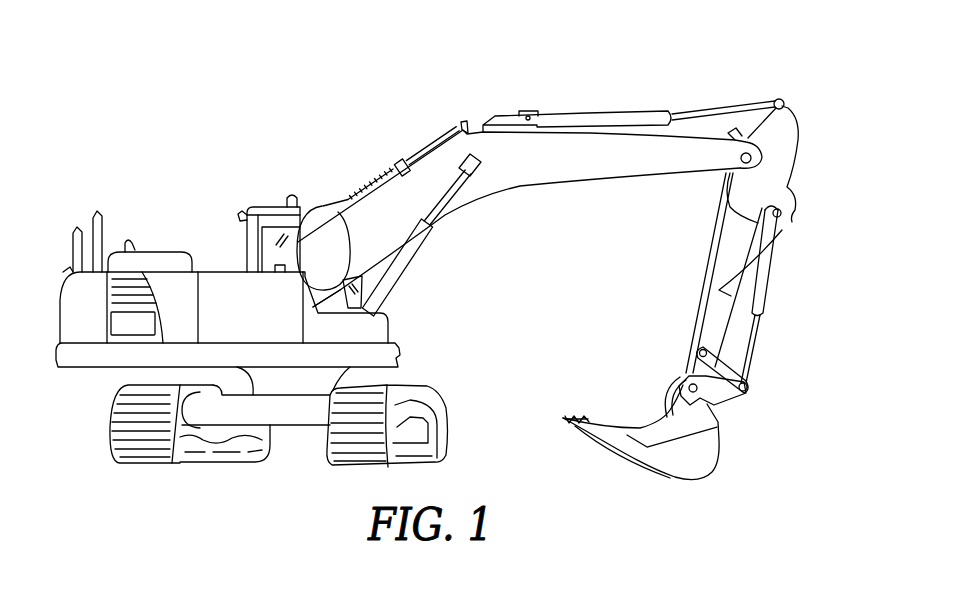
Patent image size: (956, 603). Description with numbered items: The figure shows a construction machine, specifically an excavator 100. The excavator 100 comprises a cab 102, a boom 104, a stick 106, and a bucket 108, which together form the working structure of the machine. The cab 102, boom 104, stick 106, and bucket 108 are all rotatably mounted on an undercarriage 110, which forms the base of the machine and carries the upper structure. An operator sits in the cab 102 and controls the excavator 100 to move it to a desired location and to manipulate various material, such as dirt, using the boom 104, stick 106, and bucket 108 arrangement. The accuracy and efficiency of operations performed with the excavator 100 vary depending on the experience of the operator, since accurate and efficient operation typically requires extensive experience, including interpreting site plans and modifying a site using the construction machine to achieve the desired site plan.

The excavator 100 is at (130, 115).
The cab 102 is at (270, 206).
The boom 104 is at (560, 160).
The stick 106 is at (730, 250).
The bucket 108 is at (710, 465).
The undercarriage 110 is at (420, 387).